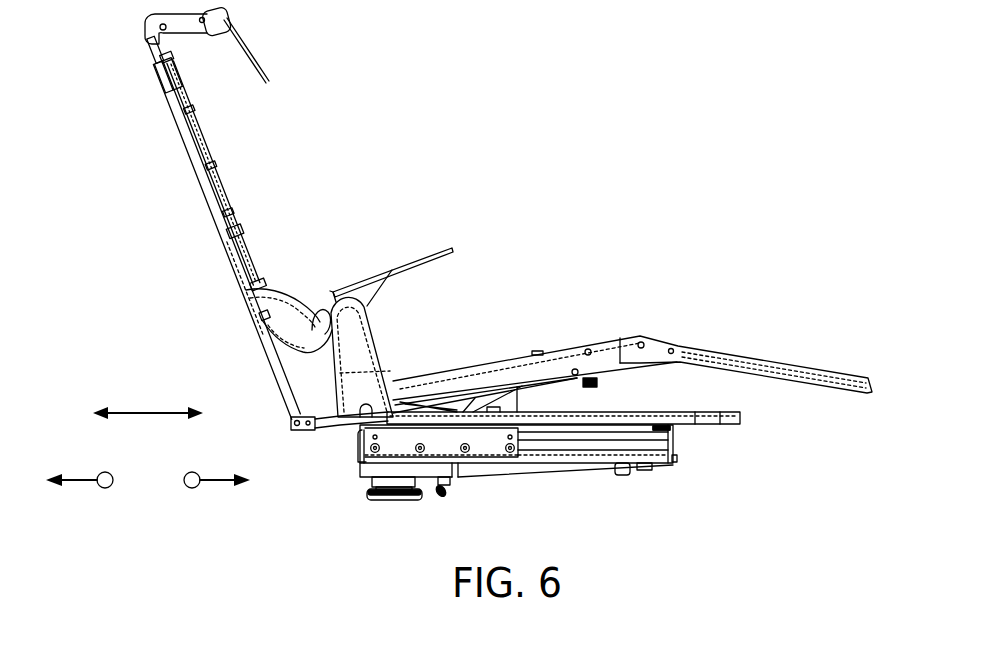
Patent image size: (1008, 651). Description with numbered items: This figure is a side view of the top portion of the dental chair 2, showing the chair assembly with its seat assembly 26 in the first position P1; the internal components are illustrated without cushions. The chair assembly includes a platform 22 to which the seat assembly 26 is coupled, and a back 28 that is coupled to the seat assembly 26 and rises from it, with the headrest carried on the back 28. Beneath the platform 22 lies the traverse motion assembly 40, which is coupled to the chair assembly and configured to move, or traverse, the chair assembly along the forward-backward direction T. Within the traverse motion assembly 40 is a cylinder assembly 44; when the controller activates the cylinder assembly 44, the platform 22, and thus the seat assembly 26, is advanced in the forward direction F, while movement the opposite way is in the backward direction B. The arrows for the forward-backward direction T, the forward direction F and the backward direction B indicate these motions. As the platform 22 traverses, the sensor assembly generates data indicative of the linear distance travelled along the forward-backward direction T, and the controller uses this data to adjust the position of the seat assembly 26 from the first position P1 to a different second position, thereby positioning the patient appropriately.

The dental chair 2 is at (488, 304).
The platform 22 is at (707, 417).
The seat assembly 26 is at (503, 356).
The back 28 is at (227, 253).
The traverse motion assembly 40 is at (532, 503).
The cylinder assembly 44 is at (487, 472).
The first position P1 is at (356, 511).
The forward-backward direction T is at (148, 396).
The backward direction B is at (85, 487).
The forward direction F is at (205, 487).